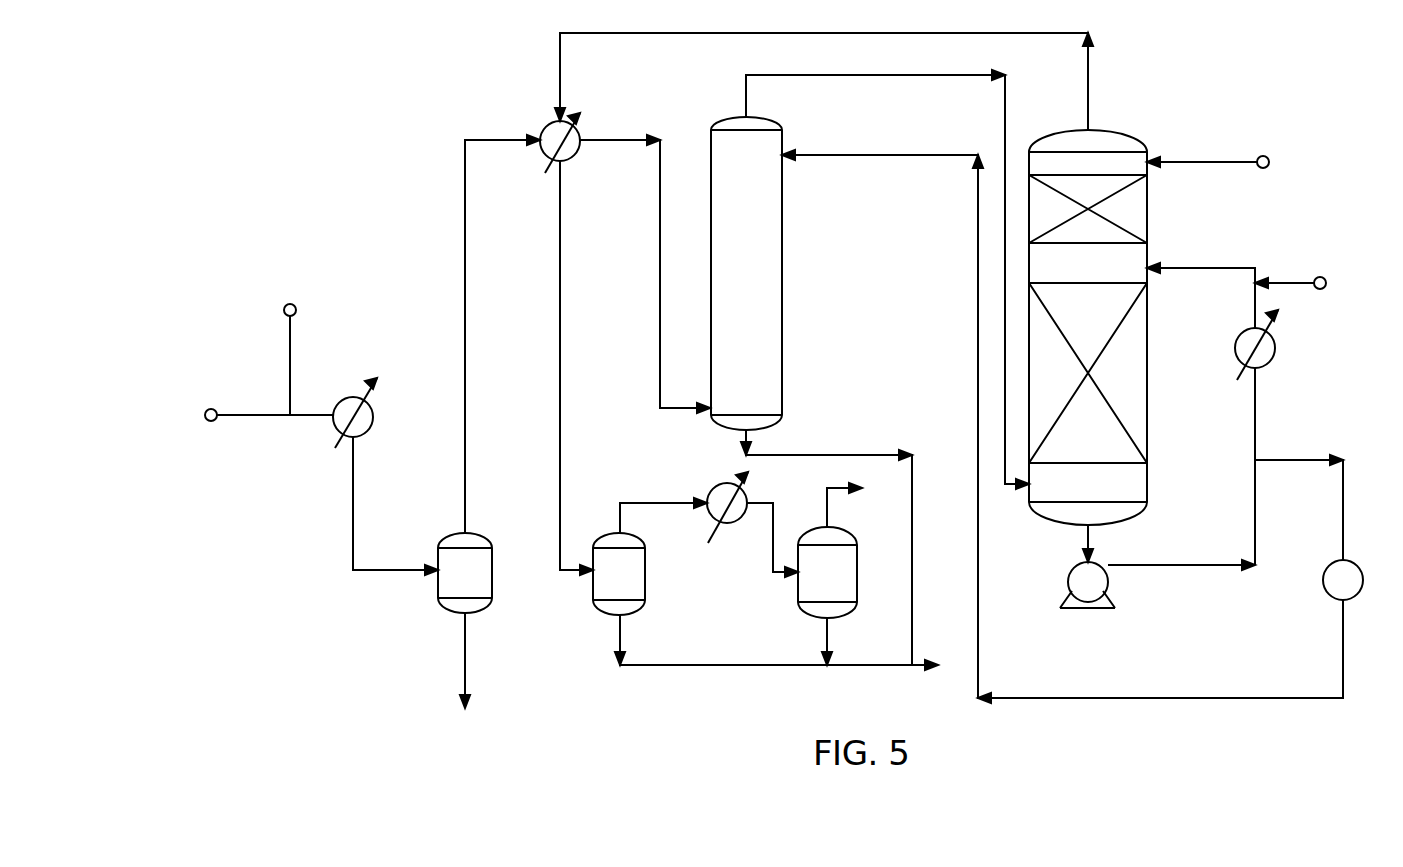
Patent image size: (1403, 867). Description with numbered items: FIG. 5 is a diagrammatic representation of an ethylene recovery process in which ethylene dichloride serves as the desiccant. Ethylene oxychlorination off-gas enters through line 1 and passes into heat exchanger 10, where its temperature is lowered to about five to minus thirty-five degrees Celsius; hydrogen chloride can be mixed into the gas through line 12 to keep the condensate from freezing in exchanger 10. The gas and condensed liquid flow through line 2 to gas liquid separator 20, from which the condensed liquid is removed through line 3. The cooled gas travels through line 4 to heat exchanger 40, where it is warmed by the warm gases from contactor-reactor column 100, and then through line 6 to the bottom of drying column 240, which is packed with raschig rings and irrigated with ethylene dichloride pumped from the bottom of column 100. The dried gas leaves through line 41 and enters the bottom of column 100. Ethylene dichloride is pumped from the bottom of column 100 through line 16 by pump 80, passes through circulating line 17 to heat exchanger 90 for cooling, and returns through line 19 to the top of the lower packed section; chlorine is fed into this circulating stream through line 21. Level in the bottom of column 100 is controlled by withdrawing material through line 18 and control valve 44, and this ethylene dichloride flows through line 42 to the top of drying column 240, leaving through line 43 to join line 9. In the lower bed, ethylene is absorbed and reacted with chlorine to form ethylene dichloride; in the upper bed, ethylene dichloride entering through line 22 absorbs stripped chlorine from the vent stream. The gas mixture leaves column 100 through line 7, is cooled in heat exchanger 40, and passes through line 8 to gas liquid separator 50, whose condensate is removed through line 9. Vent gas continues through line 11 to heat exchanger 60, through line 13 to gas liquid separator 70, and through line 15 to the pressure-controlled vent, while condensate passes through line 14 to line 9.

The line 1 is at (266, 412).
The line 2 is at (356, 455).
The line 3 is at (467, 664).
The line 4 is at (465, 345).
The line 6 is at (660, 205).
The line 7 is at (736, 34).
The line 8 is at (560, 345).
The line 9 is at (622, 638).
The heat exchanger 10 is at (365, 428).
The line 11 is at (620, 518).
The line 12 is at (291, 349).
The line 13 is at (773, 543).
The line 14 is at (827, 643).
The line 15 is at (827, 508).
The line 16 is at (1090, 540).
The circulating line 17 is at (1257, 378).
The line 18 is at (1290, 461).
The line 19 is at (1255, 315).
The gas liquid separator 20 is at (478, 590).
The line 21 is at (1301, 283).
The line 22 is at (1221, 162).
The heat exchanger 40 is at (572, 152).
The line 41 is at (908, 77).
The line 42 is at (1099, 698).
The line 43 is at (838, 455).
The control valve 44 is at (1323, 580).
The gas liquid separator 50 is at (633, 590).
The heat exchanger 60 is at (739, 514).
The gas liquid separator 70 is at (841, 588).
The pump 80 is at (1100, 593).
The heat exchanger 90 is at (1267, 359).
The contactor-reactor column 100 is at (1109, 280).
The drying column 240 is at (767, 280).